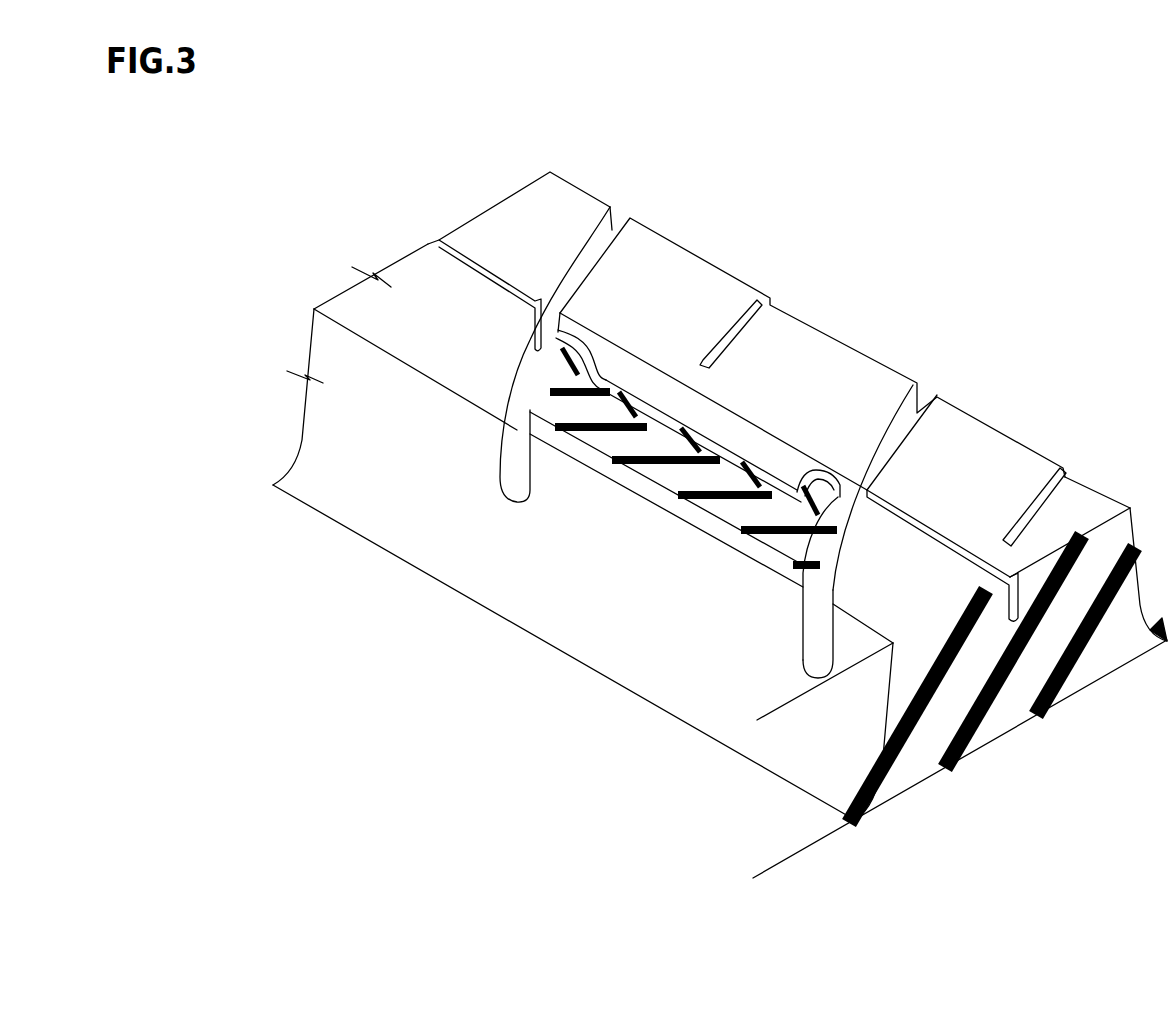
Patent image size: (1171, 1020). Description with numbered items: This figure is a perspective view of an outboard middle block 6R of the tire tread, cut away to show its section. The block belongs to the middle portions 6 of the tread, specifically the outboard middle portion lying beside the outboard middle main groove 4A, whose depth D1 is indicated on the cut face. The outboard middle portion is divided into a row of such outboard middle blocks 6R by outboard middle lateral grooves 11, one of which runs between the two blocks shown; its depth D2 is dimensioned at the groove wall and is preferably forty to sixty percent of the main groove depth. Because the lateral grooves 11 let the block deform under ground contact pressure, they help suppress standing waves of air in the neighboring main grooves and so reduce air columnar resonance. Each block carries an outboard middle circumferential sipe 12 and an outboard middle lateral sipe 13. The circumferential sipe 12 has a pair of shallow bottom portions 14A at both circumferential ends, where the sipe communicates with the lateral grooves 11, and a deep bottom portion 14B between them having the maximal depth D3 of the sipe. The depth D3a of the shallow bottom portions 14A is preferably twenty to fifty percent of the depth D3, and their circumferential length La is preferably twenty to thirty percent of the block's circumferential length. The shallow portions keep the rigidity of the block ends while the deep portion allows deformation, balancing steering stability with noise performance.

The outboard middle main groove 4A is at (627, 632).
The middle portion 6 is at (425, 291).
The outboard middle block 6R is at (316, 283).
The outboard middle lateral groove 11 is at (609, 225).
The outboard middle circumferential sipe 12 is at (993, 275).
The outboard middle lateral sipe 13 is at (730, 330).
The shallow bottom portion 14A is at (587, 320).
The deep bottom portion 14B is at (730, 426).
The circumferential length of shallow bottom portion La is at (598, 377).
The depth of main groove D1 is at (757, 721).
The depth of outboard middle lateral groove D2 is at (478, 444).
The depth of deep bottom portion D3 is at (772, 400).
The depth of shallow bottom portion D3a is at (823, 435).